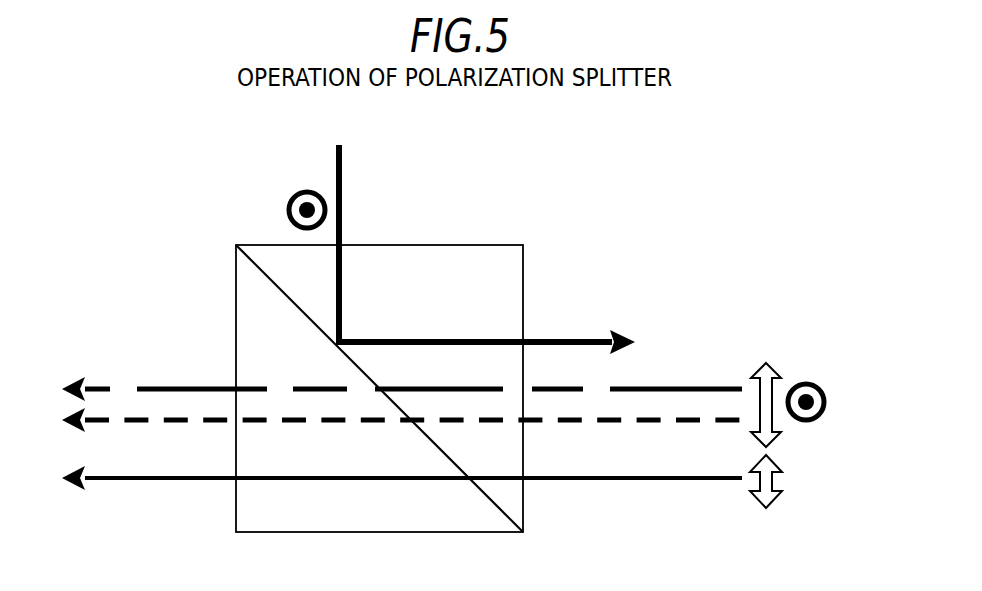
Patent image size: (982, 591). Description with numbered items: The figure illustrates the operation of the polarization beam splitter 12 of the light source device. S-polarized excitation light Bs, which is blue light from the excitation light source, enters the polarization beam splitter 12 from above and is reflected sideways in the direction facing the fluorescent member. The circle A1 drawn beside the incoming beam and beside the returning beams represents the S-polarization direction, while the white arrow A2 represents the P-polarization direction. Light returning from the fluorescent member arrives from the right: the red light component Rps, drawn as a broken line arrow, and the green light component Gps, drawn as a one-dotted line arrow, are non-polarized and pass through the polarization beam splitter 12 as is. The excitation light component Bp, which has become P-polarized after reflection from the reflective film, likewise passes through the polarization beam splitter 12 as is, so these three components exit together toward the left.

The polarization beam splitter 12 is at (460, 245).
The S-polarized excitation light Bs is at (481, 232).
The S-polarization direction A1 is at (561, 296).
The P-polarization direction A2 is at (775, 443).
The green light component Gps is at (709, 387).
The red light component Rps is at (648, 413).
The excitation light component Bp is at (658, 481).